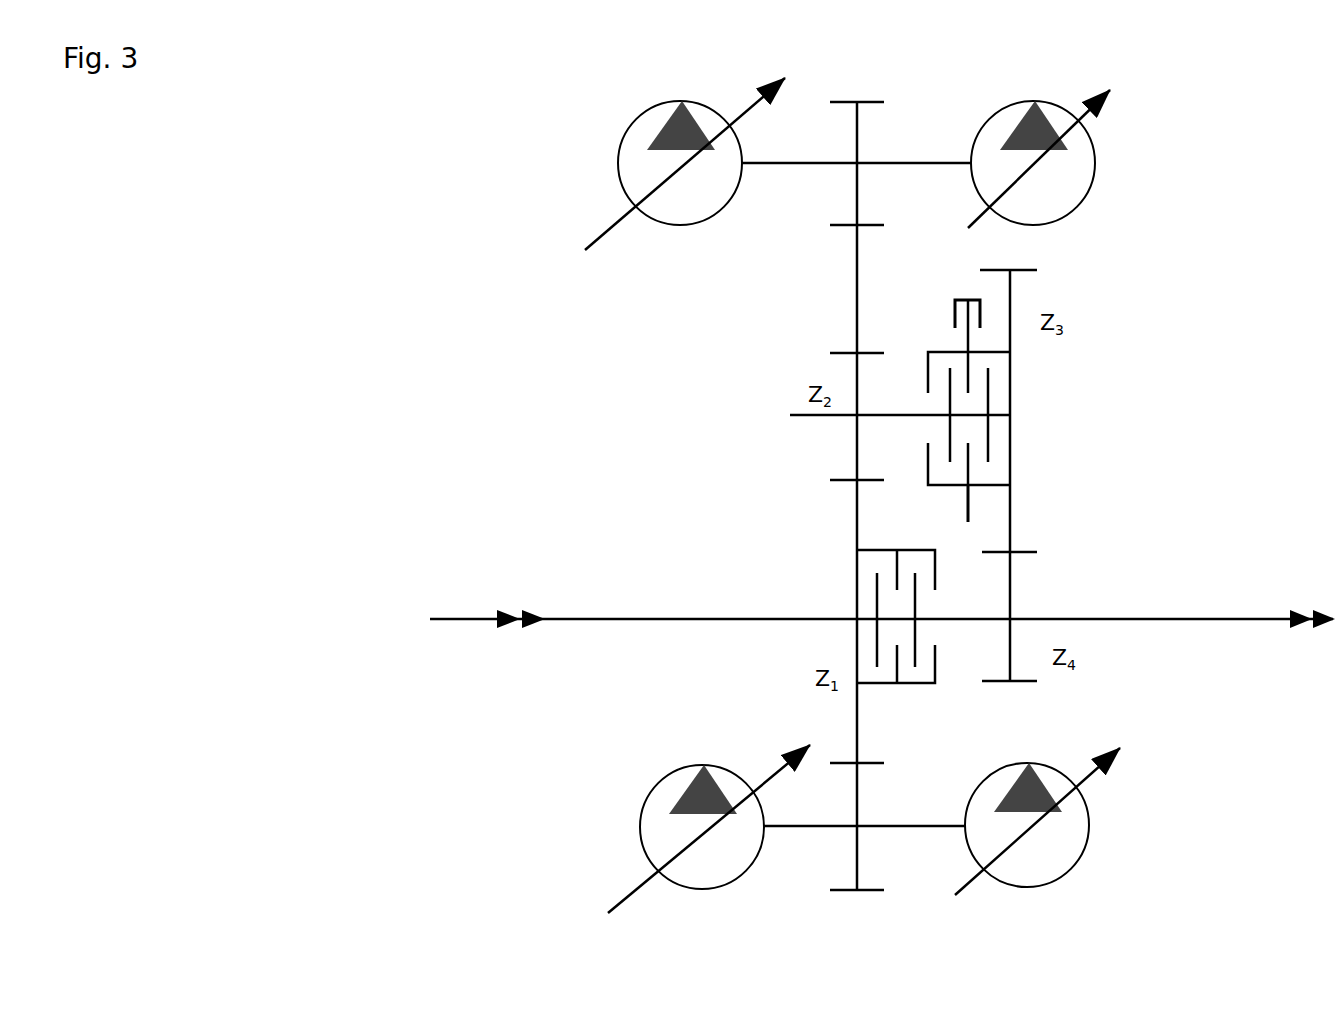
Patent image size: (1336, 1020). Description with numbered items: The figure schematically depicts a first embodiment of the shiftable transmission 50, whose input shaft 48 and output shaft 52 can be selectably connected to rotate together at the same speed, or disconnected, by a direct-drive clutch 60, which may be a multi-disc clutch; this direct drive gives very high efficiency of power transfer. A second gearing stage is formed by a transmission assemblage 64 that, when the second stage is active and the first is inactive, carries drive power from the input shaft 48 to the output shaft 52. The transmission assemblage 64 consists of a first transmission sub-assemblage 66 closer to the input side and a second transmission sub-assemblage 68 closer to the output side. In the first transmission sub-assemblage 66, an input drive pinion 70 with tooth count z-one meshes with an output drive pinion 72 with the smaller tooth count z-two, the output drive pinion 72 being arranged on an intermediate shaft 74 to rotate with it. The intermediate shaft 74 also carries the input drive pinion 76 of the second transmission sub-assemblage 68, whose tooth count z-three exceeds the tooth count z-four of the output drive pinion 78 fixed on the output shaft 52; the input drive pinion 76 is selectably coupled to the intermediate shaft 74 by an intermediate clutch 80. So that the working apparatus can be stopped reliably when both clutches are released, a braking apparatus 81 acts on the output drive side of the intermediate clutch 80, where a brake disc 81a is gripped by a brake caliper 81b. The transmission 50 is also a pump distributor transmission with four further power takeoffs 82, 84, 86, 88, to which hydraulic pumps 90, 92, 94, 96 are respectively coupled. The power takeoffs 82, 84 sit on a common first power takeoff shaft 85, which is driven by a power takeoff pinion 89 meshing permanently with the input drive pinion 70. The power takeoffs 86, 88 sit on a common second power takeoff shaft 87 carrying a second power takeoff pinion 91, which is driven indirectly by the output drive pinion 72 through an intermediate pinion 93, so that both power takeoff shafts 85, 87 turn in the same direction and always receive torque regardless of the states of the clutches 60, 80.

The input shaft 48 is at (556, 619).
The shiftable transmission 50 is at (380, 291).
The output shaft 52 is at (1258, 619).
The direct-drive clutch 60 is at (937, 632).
The transmission assemblage 64 is at (1112, 377).
The first transmission sub-assemblage 66 is at (803, 364).
The second transmission sub-assemblage 68 is at (1062, 695).
The input drive pinion 70 is at (856, 547).
The output drive pinion 72 is at (856, 448).
The intermediate shaft 74 is at (888, 415).
The input drive pinion 76 is at (1010, 498).
The output drive pinion 78 is at (1010, 578).
The intermediate clutch 80 is at (1022, 415).
The braking apparatus 81 is at (967, 276).
The brake disc 81a is at (968, 518).
The brake caliper 81b is at (975, 298).
The power takeoff 82 is at (774, 852).
The power takeoff 84 is at (950, 852).
The first power takeoff shaft 85 is at (900, 832).
The power takeoff 86 is at (759, 182).
The second power takeoff shaft 87 is at (893, 163).
The power takeoff 88 is at (952, 183).
The power takeoff pinion 89 is at (840, 893).
The hydraulic pump 90 is at (709, 829).
The second power takeoff pinion 91 is at (857, 200).
The hydraulic pump 92 is at (1037, 821).
The intermediate pinion 93 is at (856, 320).
The hydraulic pump 94 is at (685, 164).
The hydraulic pump 96 is at (1039, 159).